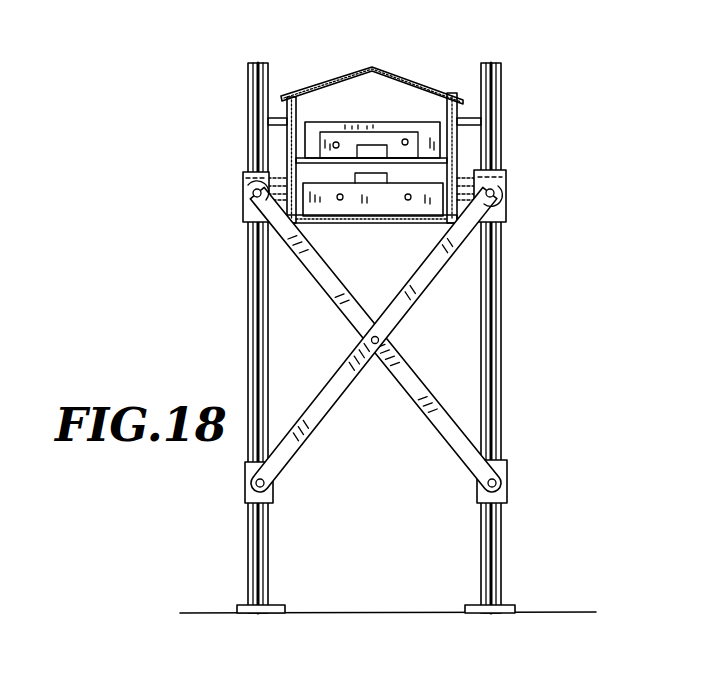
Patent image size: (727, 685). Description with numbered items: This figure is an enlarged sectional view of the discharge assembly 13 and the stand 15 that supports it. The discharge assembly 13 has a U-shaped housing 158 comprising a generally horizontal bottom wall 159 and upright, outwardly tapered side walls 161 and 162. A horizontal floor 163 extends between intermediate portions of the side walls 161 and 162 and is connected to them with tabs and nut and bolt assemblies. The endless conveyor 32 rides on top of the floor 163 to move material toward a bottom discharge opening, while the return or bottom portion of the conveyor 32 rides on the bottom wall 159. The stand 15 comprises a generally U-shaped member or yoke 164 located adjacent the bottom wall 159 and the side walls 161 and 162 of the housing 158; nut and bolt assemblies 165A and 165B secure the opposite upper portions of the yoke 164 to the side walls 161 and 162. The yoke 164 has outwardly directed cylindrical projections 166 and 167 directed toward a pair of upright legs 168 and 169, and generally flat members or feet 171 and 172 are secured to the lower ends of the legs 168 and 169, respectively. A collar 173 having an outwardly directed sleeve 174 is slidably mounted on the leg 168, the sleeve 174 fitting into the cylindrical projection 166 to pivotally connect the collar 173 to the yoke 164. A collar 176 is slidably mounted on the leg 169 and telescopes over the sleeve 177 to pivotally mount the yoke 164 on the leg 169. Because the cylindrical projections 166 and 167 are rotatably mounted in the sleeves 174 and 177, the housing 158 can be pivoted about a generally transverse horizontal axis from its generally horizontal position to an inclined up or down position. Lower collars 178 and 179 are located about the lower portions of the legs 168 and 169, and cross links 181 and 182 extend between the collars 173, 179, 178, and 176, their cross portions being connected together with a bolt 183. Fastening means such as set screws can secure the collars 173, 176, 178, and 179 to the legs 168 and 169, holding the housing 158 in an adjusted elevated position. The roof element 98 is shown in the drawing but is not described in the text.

The discharge assembly 13 is at (431, 70).
The stand 15 is at (238, 160).
The endless conveyor 32 is at (376, 118).
The roof 98 is at (348, 73).
The U-shaped housing 158 is at (458, 135).
The bottom wall 159 is at (300, 230).
The side wall 161 is at (290, 126).
The side wall 162 is at (452, 141).
The floor 163 is at (450, 166).
The yoke 164 is at (382, 226).
The nut and bolt assembly 165A is at (285, 108).
The nut and bolt assembly 165B is at (466, 118).
The cylindrical projection 166 is at (246, 180).
The cylindrical projection 167 is at (506, 182).
The leg 168 is at (250, 96).
The leg 169 is at (501, 80).
The foot 171 is at (283, 606).
The foot 172 is at (470, 606).
The collar 173 is at (246, 213).
The sleeve 174 is at (278, 232).
The collar 176 is at (507, 214).
The sleeve 177 is at (486, 240).
The lower collar 178 is at (250, 492).
The lower collar 179 is at (510, 492).
The cross link 181 is at (318, 424).
The cross link 182 is at (412, 372).
The bolt 183 is at (370, 340).